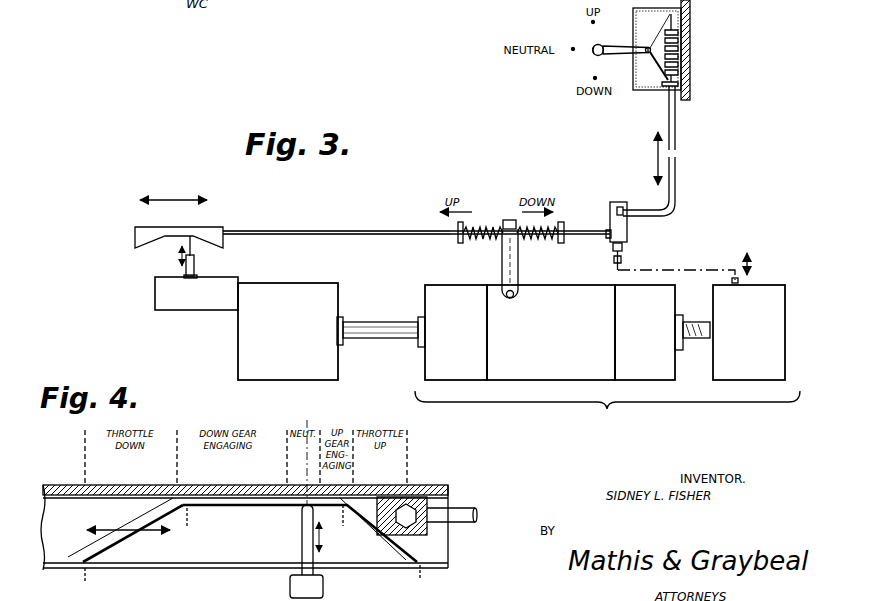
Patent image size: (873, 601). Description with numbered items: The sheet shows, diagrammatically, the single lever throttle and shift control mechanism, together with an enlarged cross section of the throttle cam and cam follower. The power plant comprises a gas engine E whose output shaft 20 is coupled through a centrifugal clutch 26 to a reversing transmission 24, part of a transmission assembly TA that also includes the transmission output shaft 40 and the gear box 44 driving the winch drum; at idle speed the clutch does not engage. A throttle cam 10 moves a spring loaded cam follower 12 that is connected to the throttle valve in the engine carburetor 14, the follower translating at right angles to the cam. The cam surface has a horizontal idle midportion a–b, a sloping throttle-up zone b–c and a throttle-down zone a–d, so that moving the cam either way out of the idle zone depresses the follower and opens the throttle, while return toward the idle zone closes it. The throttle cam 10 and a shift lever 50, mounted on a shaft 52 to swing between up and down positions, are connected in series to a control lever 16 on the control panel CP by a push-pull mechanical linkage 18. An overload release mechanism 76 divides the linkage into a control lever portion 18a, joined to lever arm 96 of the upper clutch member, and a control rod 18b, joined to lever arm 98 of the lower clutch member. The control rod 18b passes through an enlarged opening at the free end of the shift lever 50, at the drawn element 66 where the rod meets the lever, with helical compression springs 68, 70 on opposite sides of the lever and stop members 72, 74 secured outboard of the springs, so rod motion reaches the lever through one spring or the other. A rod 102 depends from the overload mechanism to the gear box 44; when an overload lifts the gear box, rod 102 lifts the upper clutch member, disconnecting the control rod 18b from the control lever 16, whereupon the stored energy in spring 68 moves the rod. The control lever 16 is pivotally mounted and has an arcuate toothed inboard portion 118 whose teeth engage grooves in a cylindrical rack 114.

In FIG. 3, the throttle cam 10 is at (136, 240).
In FIG. 4, the throttle cam 10 is at (213, 512).
In FIG. 3, the cam follower 12 is at (198, 260).
In FIG. 4, the cam follower 12 is at (300, 538).
In FIG. 3, the engine carburetor 14 is at (168, 304).
In FIG. 3, the control lever 16 is at (626, 44).
In FIG. 3, the mechanical linkage 18 is at (387, 222).
In FIG. 3, the control lever portion 18a is at (678, 196).
In FIG. 3, the control rod 18b is at (322, 229).
In FIG. 4, the control rod 18b is at (463, 509).
In FIG. 3, the output shaft 20 is at (382, 324).
In FIG. 3, the reversing transmission 24 is at (551, 332).
In FIG. 3, the centrifugal clutch 26 is at (452, 332).
In FIG. 3, the output shaft 40 is at (662, 332).
In FIG. 3, the gear box 44 is at (749, 332).
In FIG. 3, the shift lever 50 is at (518, 266).
In FIG. 3, the shaft 52 is at (518, 295).
In FIG. 3, the collar on shift lever 66 is at (507, 220).
In FIG. 3, the helical coil compression spring 68 is at (558, 226).
In FIG. 3, the helical coil compression spring 70 is at (480, 243).
In FIG. 3, the stop member 72 is at (566, 230).
In FIG. 3, the stop member 74 is at (457, 239).
In FIG. 3, the overload release mechanism 76 is at (612, 192).
In FIG. 3, the lever arm 96 is at (624, 208).
In FIG. 3, the lever arm 98 is at (607, 240).
In FIG. 3, the rod 102 is at (626, 262).
In FIG. 3, the cylindrical rack 114 is at (686, 44).
In FIG. 3, the arcuate toothed inboard portion 118 is at (656, 82).
In FIG. 3, the control panel CP is at (700, 14).
In FIG. 3, the gas engine E is at (288, 331).
In FIG. 3, the transmission assembly TA is at (607, 356).
In FIG. 4, the cam surface point a is at (190, 523).
In FIG. 4, the cam surface point b is at (345, 522).
In FIG. 4, the cam surface point c is at (423, 580).
In FIG. 4, the cam surface point d is at (84, 583).